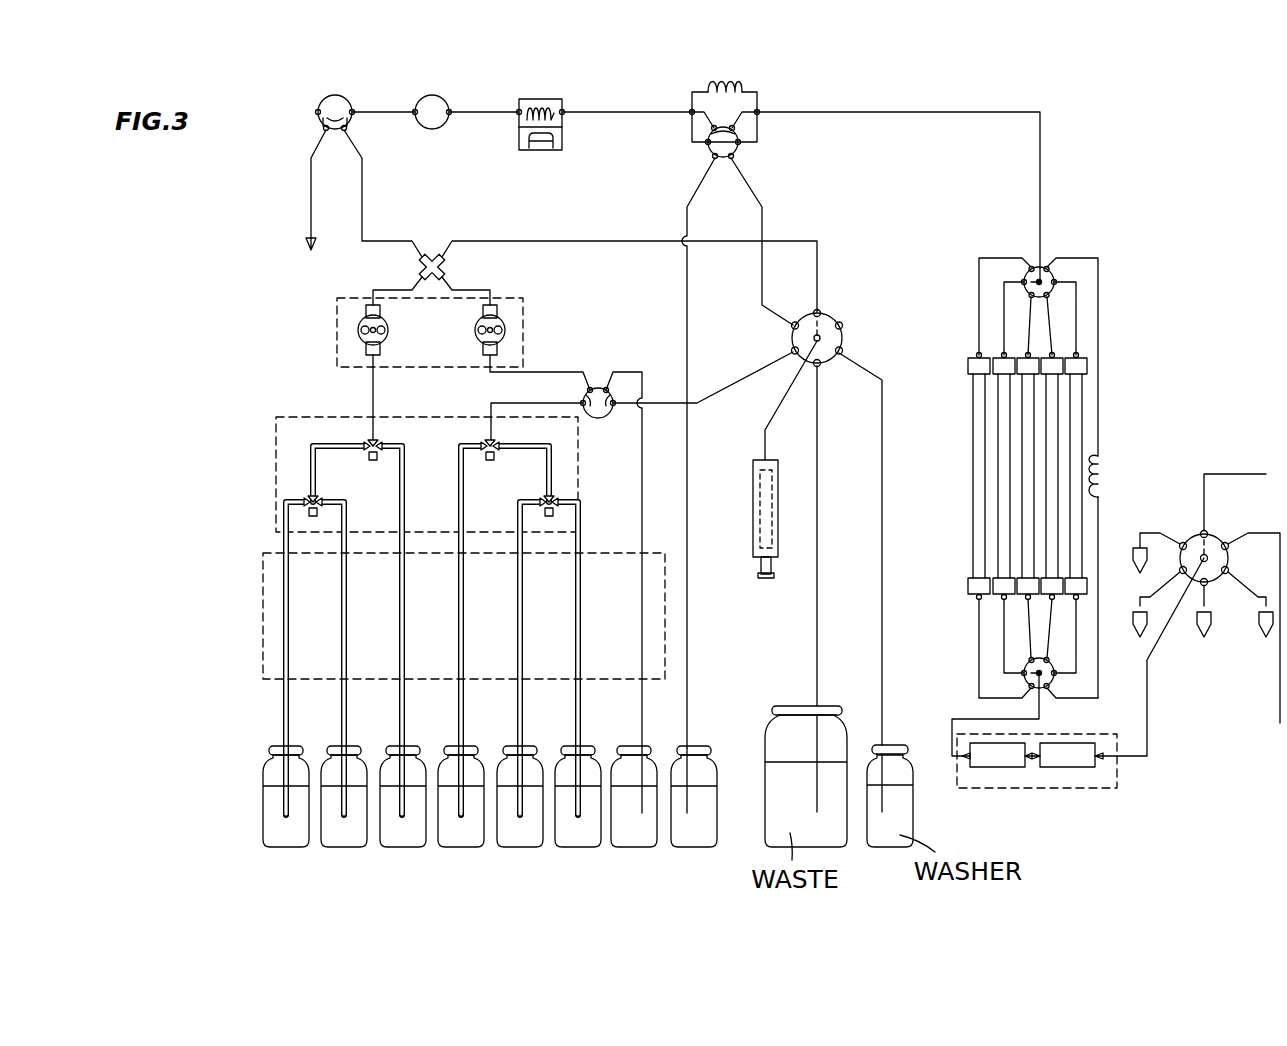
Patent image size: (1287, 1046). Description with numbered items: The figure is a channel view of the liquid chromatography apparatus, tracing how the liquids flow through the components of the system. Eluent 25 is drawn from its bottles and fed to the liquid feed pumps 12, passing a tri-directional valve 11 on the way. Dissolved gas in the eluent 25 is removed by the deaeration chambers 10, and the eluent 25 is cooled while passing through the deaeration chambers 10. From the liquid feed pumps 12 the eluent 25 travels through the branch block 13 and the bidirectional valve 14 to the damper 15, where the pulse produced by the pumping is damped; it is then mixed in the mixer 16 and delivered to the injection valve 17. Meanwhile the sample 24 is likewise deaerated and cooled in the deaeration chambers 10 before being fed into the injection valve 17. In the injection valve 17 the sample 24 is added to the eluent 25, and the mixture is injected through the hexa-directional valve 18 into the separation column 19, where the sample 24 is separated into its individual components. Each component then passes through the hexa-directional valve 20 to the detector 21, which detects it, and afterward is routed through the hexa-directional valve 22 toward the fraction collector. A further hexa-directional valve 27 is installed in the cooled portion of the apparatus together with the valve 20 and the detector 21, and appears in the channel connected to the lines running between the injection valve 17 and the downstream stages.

The deaeration chambers 10 is at (263, 570).
The tri-directional valve 11 is at (276, 428).
The liquid feed pumps 12 is at (337, 320).
The branch block 13 is at (438, 252).
The bidirectional valve 14 is at (322, 97).
The damper 15 is at (446, 97).
The mixer 16 is at (556, 97).
The injection valve 17 is at (758, 87).
The hexa-directional valve 18 is at (1040, 268).
The separation column 19 is at (1080, 405).
The hexa-directional valve 20 is at (1050, 676).
The detector 21 is at (1058, 790).
The hexa-directional valve 22 is at (1192, 540).
The sample 24 is at (632, 847).
The eluent 25 is at (281, 847).
The hexa-directional valve 27 is at (842, 325).